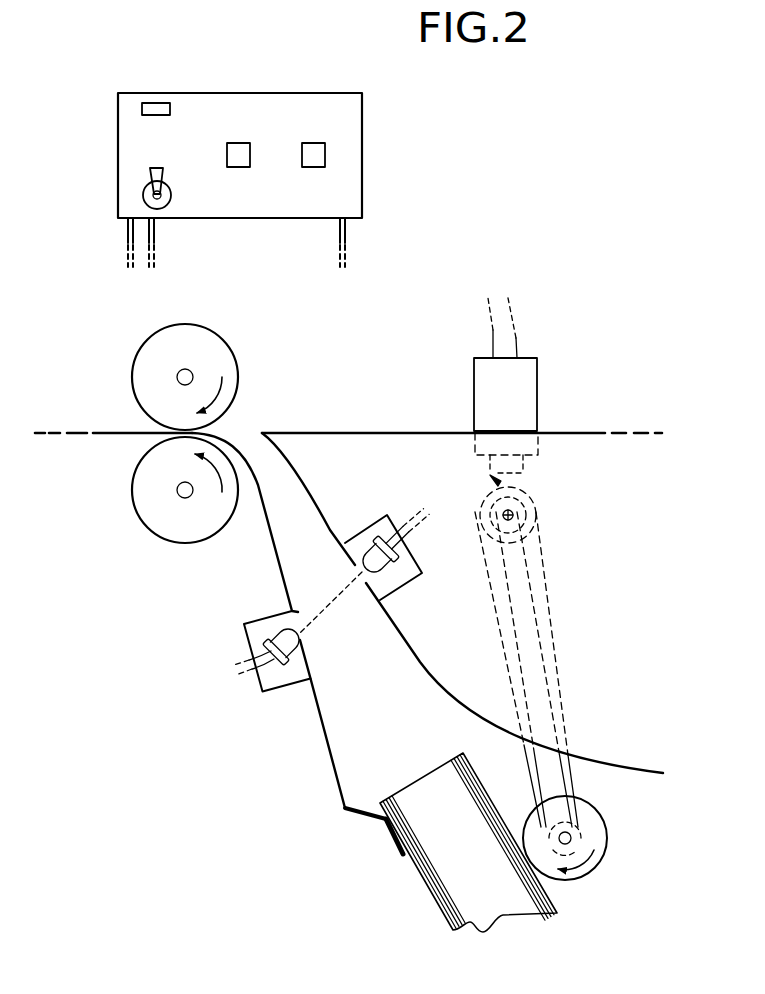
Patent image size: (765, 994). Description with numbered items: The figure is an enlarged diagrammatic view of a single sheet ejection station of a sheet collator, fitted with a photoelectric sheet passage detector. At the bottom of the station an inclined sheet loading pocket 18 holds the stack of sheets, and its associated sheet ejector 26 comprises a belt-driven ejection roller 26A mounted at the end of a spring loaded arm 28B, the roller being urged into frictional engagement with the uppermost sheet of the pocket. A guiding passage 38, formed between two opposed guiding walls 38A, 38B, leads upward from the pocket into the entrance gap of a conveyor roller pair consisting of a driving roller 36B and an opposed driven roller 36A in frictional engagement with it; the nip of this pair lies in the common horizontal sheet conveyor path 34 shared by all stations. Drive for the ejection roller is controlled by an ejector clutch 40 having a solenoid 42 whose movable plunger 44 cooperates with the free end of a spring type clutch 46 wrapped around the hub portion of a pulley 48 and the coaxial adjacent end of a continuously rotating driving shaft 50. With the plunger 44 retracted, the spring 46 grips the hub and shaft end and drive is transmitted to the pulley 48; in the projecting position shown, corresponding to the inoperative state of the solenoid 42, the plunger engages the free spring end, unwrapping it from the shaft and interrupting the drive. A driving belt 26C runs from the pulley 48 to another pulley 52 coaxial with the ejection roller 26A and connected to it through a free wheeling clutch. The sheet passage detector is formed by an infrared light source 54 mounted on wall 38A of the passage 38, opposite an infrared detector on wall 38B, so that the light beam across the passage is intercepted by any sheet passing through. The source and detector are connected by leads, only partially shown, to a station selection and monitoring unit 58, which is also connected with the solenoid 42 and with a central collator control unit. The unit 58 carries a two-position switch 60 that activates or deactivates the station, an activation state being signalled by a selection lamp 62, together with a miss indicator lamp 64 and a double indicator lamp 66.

The sheet loading pocket 18 is at (425, 807).
The sheet ejector 26 is at (572, 693).
The ejection roller 26A is at (597, 832).
The driving belt 26C is at (575, 778).
The spring loaded arm 28B is at (552, 763).
The sheet conveyor path 34 is at (577, 432).
The driven roller 36A is at (140, 372).
The driving roller 36B is at (146, 517).
The guiding passage 38 is at (427, 643).
The guiding wall 38A is at (340, 756).
The guiding wall 38B is at (430, 680).
The ejector clutch 40 is at (502, 392).
The solenoid 42 is at (485, 392).
The movable plunger 44 is at (520, 470).
The spring type clutch 46 is at (487, 474).
The pulley 48 is at (528, 535).
The driving shaft 50 is at (522, 513).
The pulley 52 is at (572, 838).
The infrared light source 54 is at (363, 540).
The station selection and monitoring unit 58 is at (243, 163).
The switch 60 is at (146, 189).
The selection lamp 62 is at (153, 93).
The miss indicator lamp 64 is at (236, 157).
The double indicator lamp 66 is at (313, 157).